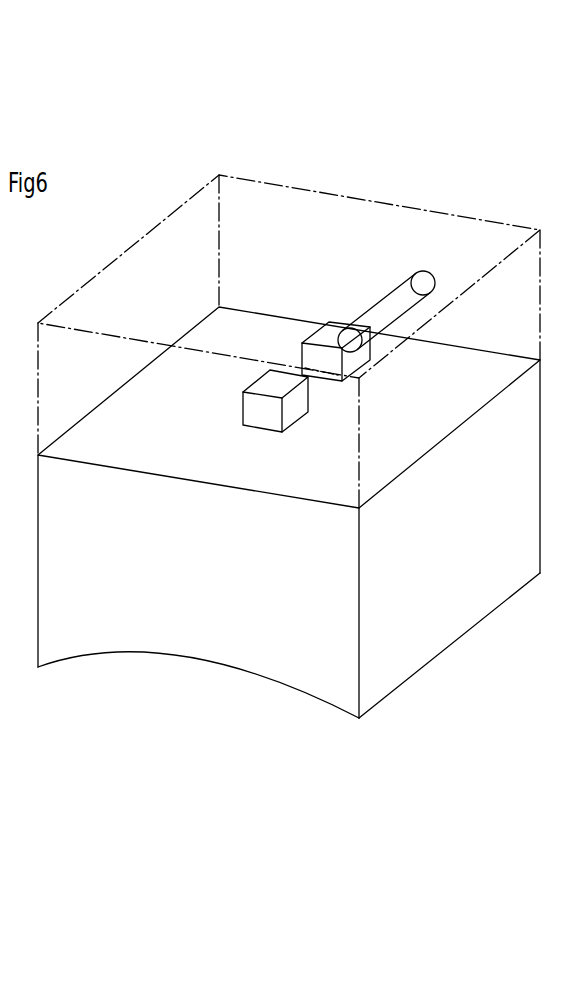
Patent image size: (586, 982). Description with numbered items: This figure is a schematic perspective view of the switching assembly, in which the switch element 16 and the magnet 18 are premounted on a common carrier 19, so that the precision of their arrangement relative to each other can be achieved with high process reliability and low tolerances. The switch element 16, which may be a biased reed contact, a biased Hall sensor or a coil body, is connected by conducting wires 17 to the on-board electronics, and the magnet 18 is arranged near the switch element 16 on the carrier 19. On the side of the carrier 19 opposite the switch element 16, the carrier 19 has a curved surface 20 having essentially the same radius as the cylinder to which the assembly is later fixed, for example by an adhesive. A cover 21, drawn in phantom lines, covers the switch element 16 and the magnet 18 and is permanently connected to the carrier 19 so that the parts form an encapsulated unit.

The switch element 16 is at (330, 350).
The conducting wires 17 is at (383, 307).
The magnet 18 is at (257, 410).
The carrier 19 is at (224, 611).
The curved surface 20 is at (278, 677).
The cover 21 is at (147, 235).